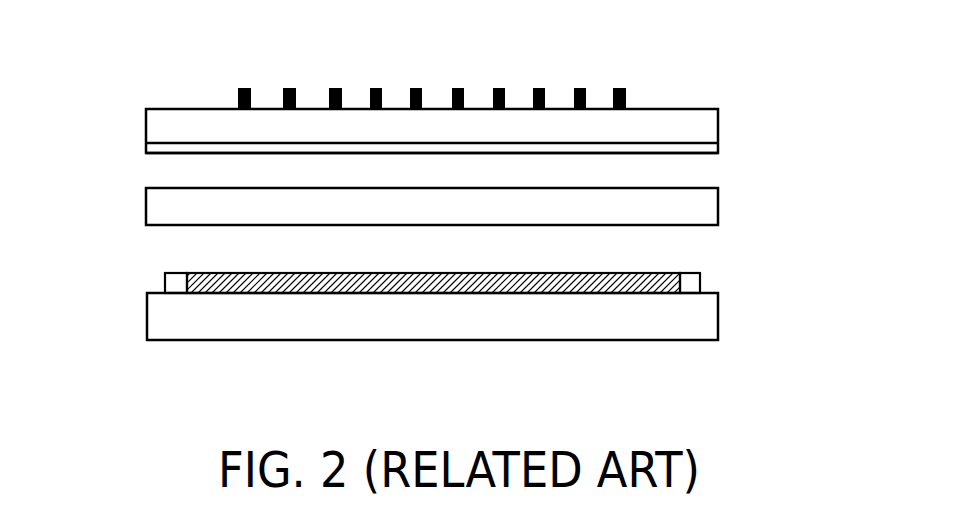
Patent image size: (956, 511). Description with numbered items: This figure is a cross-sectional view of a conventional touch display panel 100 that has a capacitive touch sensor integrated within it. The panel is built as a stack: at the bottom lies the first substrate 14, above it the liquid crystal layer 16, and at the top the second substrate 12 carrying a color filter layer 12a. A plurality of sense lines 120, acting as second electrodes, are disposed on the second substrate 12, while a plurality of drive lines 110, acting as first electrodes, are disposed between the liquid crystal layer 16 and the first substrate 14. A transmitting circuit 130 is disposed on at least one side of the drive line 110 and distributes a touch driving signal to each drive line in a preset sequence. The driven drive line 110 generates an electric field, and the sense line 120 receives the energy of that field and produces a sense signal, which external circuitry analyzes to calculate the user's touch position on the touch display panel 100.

The touch display panel 100 is at (432, 232).
The second substrate 12 is at (712, 122).
The color filter layer 12a is at (712, 150).
The sense line 120 is at (626, 97).
The liquid crystal layer 16 is at (702, 208).
The drive line 110 is at (662, 273).
The transmitting circuit 130 is at (164, 282).
The first substrate 14 is at (703, 315).